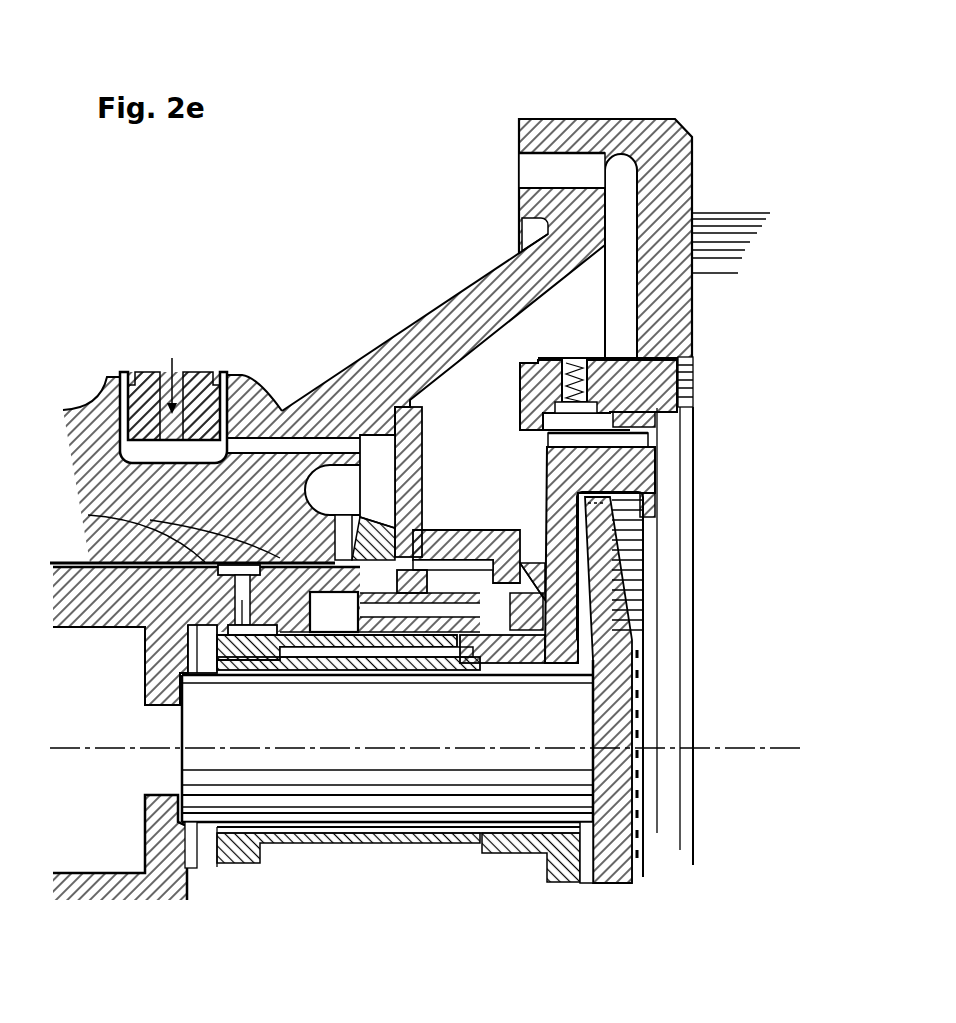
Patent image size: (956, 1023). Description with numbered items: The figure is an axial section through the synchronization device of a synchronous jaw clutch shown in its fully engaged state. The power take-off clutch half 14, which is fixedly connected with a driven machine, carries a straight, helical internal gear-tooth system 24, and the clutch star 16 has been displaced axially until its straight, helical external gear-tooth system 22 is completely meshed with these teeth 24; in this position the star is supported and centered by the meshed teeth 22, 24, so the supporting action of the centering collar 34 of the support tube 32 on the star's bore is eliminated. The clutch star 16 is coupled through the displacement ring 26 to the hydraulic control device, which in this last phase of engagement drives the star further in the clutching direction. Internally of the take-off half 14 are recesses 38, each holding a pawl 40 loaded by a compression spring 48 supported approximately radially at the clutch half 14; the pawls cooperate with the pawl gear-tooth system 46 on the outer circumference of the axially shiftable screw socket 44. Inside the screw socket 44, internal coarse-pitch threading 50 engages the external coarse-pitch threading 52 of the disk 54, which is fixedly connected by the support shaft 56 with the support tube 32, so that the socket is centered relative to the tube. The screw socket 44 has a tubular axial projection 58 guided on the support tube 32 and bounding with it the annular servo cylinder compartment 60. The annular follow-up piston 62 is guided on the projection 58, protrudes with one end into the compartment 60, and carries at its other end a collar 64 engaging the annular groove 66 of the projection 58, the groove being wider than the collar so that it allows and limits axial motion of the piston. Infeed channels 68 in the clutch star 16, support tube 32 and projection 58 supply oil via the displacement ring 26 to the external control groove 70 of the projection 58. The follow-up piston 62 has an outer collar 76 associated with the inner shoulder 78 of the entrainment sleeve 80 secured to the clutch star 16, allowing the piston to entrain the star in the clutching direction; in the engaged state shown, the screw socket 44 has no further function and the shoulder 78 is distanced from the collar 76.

The power take-off clutch half 14 is at (680, 165).
The clutch star 16 is at (356, 385).
The external gear-tooth system 22 is at (525, 177).
The internal gear-tooth system 24 is at (567, 150).
The displacement ring 26 is at (193, 378).
The support tube 32 is at (92, 610).
The centering collar 34 is at (205, 467).
The recess 38 is at (613, 418).
The pawl 40 is at (557, 420).
The screw socket 44 is at (650, 465).
The pawl gear-tooth system 46 is at (563, 437).
The compression spring 48 is at (548, 380).
The internal coarse-pitch threading 50 is at (633, 572).
The external coarse-pitch threading 52 is at (638, 510).
The disk 54 is at (610, 627).
The support shaft 56 is at (580, 737).
The axial projection 58 is at (500, 660).
The servo cylinder compartment 60 is at (333, 622).
The follow-up piston 62 is at (410, 627).
The collar 64 is at (575, 660).
The annular groove 66 is at (528, 660).
The infeed channels 68 is at (272, 447).
The external control groove 70 is at (478, 660).
The outer collar 76 is at (412, 573).
The inner shoulder 78 is at (473, 570).
The entrainment sleeve 80 is at (457, 540).